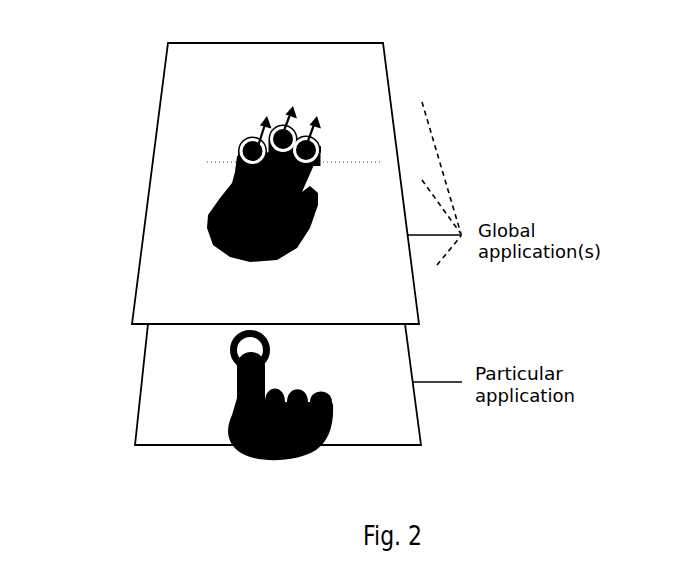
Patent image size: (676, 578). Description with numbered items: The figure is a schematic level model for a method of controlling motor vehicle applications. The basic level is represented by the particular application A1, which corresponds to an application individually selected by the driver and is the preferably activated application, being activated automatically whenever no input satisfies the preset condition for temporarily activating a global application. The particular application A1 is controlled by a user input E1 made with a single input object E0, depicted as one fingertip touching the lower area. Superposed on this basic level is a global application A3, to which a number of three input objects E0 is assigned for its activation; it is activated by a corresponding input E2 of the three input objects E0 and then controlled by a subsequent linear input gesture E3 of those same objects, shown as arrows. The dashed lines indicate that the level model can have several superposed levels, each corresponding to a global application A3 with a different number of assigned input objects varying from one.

The input object E0 is at (237, 380).
The user input E1 is at (232, 351).
The input E2 is at (234, 153).
The linear input gesture E3 is at (258, 124).
The particular application A1 is at (278, 384).
The global application A3 is at (275, 183).